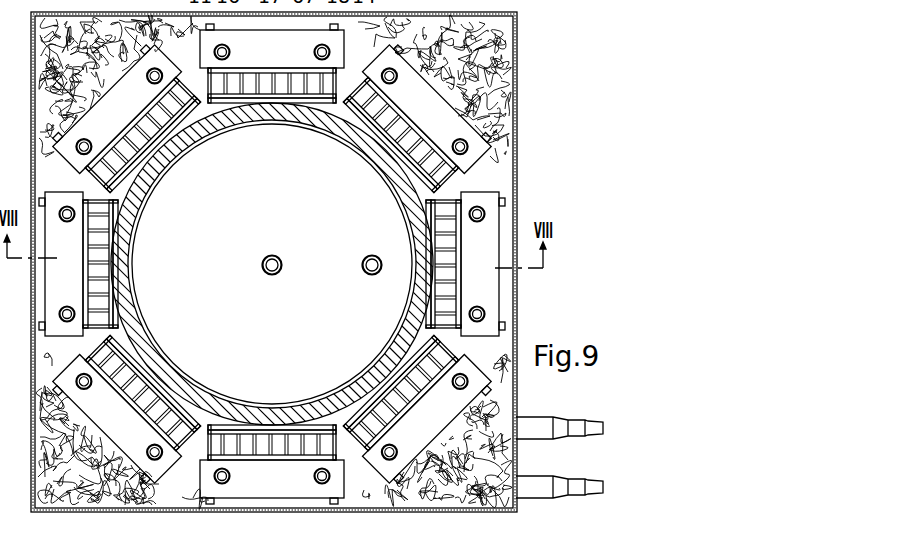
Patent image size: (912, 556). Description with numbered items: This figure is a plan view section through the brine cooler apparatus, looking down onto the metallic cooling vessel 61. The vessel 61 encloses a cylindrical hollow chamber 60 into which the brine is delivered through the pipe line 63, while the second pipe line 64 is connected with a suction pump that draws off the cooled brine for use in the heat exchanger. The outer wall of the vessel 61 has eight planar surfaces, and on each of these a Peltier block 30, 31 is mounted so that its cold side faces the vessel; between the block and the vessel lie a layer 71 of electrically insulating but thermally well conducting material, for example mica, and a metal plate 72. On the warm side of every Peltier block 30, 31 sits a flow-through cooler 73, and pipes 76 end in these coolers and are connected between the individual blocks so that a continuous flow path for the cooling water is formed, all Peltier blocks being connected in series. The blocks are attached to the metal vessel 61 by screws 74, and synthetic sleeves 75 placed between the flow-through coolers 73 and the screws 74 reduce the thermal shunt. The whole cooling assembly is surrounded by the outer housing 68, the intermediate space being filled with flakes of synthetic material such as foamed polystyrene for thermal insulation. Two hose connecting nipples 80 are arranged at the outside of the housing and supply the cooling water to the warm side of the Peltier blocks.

The Peltier block 30 is at (198, 478).
The Peltier block 31 is at (145, 444).
The cylindrical hollow chamber 60 is at (297, 193).
The metallic vessel 61 is at (238, 115).
The pipe line 63 is at (264, 257).
The pipe line 64 is at (365, 257).
The housing 68 is at (517, 57).
The layer 71 is at (135, 405).
The metal plate 72 is at (150, 432).
The flow-through cooler 73 is at (100, 412).
The screw 74 is at (72, 392).
The synthetic sleeve 75 is at (115, 200).
The pipe 76 is at (85, 368).
The hose connecting nipple 80 is at (573, 440).